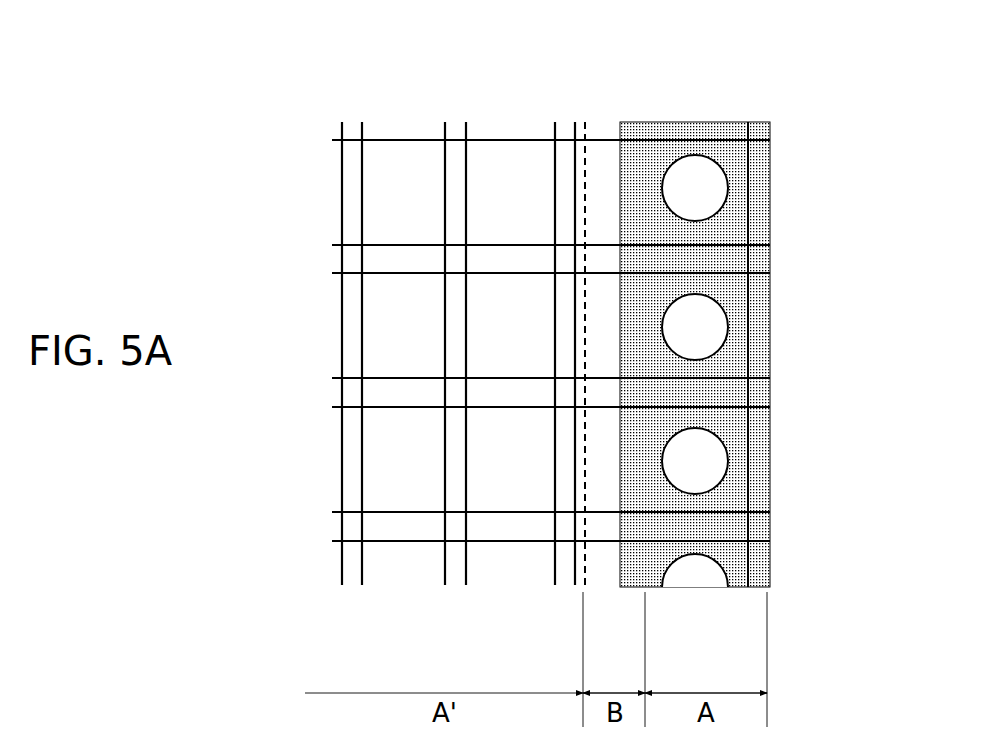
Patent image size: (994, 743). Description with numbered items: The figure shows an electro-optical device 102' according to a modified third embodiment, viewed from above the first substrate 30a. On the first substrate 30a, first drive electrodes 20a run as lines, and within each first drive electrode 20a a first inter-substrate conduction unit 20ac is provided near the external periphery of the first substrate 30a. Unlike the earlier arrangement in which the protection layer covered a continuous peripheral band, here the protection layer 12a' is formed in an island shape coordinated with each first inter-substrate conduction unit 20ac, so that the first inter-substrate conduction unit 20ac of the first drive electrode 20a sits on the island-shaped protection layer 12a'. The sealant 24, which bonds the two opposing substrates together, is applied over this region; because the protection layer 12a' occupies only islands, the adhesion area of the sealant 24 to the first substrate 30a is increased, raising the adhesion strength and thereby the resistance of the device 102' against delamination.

The electro-optical device 102' is at (294, 76).
The first drive electrode 20a is at (555, 603).
The first inter-substrate conduction unit 20ac is at (733, 603).
The protection layer 12a' is at (634, 302).
The sealant 24 is at (770, 163).
The first substrate 30a is at (770, 262).